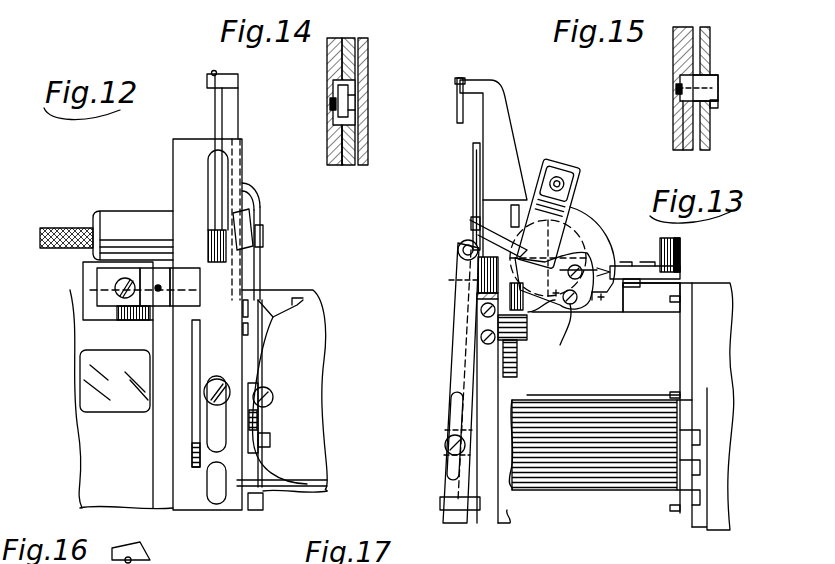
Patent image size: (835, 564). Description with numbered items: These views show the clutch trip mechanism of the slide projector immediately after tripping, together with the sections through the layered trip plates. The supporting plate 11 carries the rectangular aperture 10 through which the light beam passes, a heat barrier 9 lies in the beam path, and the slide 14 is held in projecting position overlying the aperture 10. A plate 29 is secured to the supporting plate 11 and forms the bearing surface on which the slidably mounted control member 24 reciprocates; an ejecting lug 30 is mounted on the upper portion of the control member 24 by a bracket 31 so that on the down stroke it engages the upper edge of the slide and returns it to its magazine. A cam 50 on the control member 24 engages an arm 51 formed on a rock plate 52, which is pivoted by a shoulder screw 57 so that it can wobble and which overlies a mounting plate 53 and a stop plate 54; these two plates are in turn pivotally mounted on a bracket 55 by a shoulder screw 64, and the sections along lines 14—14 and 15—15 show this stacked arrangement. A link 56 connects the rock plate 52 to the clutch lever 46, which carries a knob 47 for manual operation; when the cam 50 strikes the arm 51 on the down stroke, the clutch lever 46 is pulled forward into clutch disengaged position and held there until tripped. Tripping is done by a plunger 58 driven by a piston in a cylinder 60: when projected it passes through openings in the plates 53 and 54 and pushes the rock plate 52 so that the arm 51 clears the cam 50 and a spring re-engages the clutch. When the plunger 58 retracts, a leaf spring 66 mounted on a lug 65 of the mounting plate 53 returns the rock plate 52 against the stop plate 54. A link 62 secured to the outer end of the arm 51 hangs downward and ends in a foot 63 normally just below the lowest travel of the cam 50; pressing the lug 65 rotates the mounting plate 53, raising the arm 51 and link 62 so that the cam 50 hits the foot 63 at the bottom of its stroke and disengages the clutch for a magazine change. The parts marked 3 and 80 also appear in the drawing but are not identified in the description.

In FIG. 12, the bed plate 3 is at (298, 353).
In FIG. 13, the bed plate 3 is at (618, 370).
In FIG. 12, the heat barrier 9 is at (87, 395).
In FIG. 12, the rectangular aperture 10 is at (78, 356).
In FIG. 12, the supporting plate 11 is at (77, 327).
In FIG. 13, the supporting plate 11 is at (490, 515).
In FIG. 13, the slide 14 is at (554, 315).
In FIG. 13, the cam point 15 is at (576, 301).
In FIG. 12, the control member 24 is at (173, 152).
In FIG. 13, the control member 24 is at (472, 186).
In FIG. 12, the plate 29 is at (163, 482).
In FIG. 12, the ejecting lug 30 is at (85, 268).
In FIG. 12, the bracket 31 is at (184, 270).
In FIG. 13, the clutch lever 46 is at (660, 283).
In FIG. 13, the knob 47 is at (682, 248).
In FIG. 12, the cam 50 is at (254, 222).
In FIG. 13, the cam 50 is at (470, 222).
In FIG. 12, the arm 51 is at (263, 233).
In FIG. 13, the arm 51 is at (490, 232).
In FIG. 14, the rock plate 52 is at (368, 135).
In FIG. 15, the rock plate 52 is at (710, 135).
In FIG. 14, the mounting plate 53 is at (343, 166).
In FIG. 15, the mounting plate 53 is at (673, 122).
In FIG. 14, the stop plate 54 is at (352, 166).
In FIG. 15, the stop plate 54 is at (690, 150).
In FIG. 12, the bracket 55 is at (240, 110).
In FIG. 14, the bracket 55 is at (327, 140).
In FIG. 13, the bracket 55 is at (494, 120).
In FIG. 13, the link 56 is at (605, 268).
In FIG. 15, the shoulder screw 57 is at (718, 78).
In FIG. 13, the shoulder screw 57 is at (553, 328).
In FIG. 13, the plunger 58 is at (592, 218).
In FIG. 12, the cylinder 60 is at (150, 194).
In FIG. 12, the link 62 is at (262, 264).
In FIG. 13, the link 62 is at (462, 334).
In FIG. 12, the foot 63 is at (254, 511).
In FIG. 13, the foot 63 is at (460, 510).
In FIG. 14, the shoulder screw 64 is at (352, 92).
In FIG. 13, the shoulder screw 64 is at (449, 282).
In FIG. 13, the lug 65 is at (532, 170).
In FIG. 12, the leaf spring 66 is at (252, 200).
In FIG. 13, the leaf spring 66 is at (574, 204).
In FIG. 12, the guide bar 80 is at (192, 445).